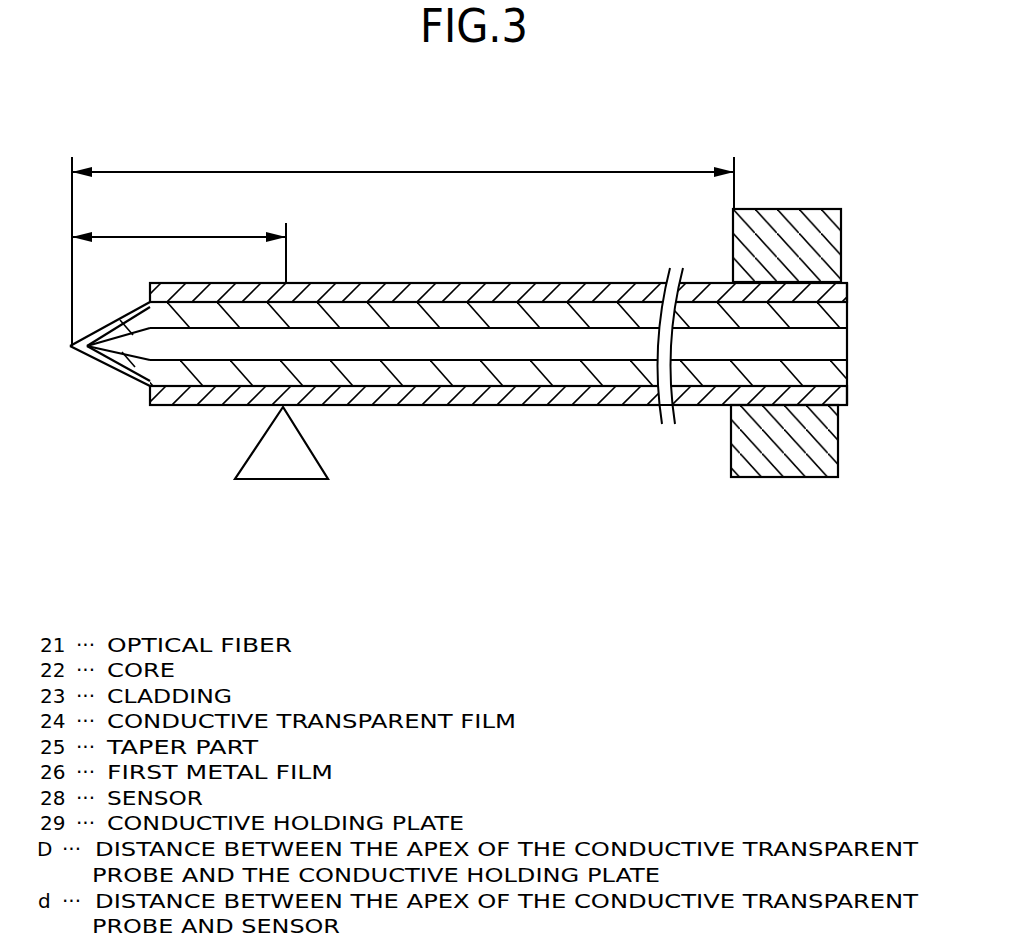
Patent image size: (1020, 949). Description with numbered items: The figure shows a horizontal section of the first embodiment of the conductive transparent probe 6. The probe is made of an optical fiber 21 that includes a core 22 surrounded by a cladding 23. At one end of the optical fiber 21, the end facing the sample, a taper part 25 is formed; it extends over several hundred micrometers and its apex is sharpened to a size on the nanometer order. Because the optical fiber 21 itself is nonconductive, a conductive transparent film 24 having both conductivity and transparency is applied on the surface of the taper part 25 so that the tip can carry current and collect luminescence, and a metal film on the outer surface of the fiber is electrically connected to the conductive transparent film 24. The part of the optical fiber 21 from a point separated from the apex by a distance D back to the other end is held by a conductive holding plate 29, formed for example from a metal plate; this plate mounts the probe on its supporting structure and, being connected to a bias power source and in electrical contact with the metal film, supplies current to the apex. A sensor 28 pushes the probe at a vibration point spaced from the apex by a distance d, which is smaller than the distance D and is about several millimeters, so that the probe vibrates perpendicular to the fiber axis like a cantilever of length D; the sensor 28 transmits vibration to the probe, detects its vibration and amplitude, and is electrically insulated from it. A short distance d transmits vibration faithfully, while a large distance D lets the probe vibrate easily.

The conductive transparent probe 6 is at (490, 406).
The optical fiber 21 is at (496, 363).
The core 22 is at (845, 343).
The cladding 23 is at (845, 372).
The conductive transparent film 24 is at (106, 374).
The taper part 25 is at (131, 372).
The sensor 28 is at (284, 468).
The conductive holding plate 29 is at (787, 478).
The distance D is at (403, 244).
The distance d is at (179, 249).